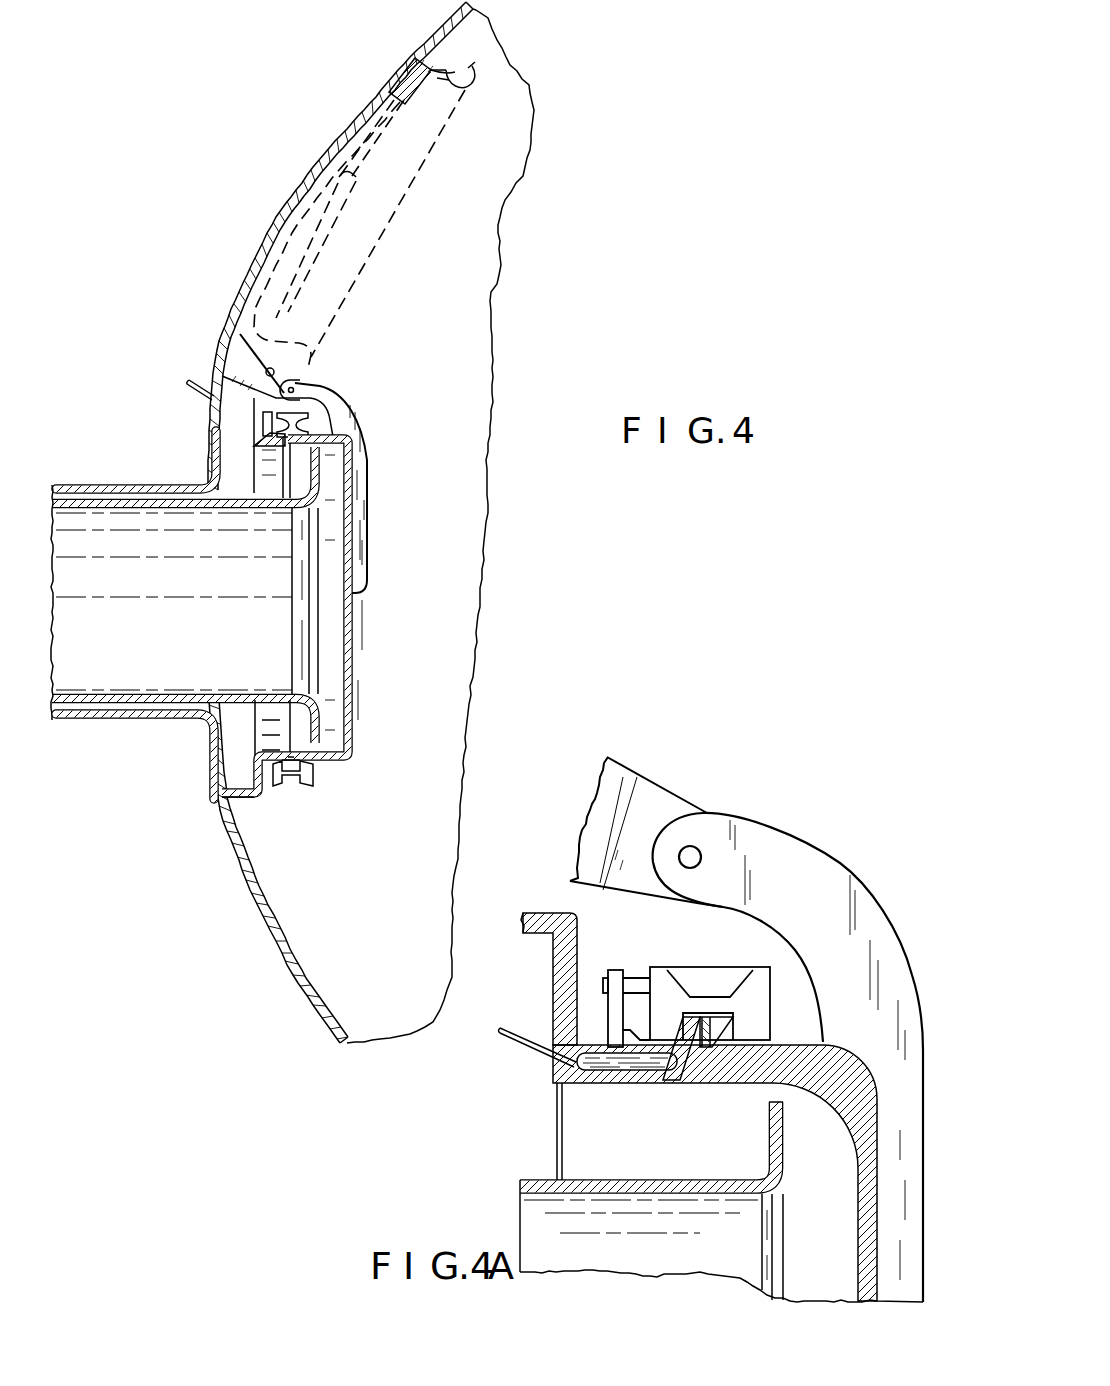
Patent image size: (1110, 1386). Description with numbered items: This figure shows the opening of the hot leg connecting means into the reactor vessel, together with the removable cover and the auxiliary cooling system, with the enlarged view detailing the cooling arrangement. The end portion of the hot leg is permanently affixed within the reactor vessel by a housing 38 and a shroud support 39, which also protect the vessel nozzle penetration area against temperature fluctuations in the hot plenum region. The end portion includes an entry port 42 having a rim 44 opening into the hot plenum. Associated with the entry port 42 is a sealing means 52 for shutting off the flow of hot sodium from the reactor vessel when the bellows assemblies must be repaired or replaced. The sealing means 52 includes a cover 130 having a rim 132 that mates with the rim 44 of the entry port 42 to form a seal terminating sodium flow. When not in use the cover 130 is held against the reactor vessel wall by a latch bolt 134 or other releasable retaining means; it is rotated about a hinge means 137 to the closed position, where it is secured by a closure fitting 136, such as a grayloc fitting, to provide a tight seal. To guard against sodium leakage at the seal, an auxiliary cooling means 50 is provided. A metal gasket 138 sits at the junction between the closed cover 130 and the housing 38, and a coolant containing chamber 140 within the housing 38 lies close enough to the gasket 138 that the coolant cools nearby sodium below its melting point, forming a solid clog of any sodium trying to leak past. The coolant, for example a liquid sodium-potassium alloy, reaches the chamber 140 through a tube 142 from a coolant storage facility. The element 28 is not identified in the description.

In FIG. 4, the pipe 28 is at (157, 703).
In FIG. 4A, the pipe 28 is at (567, 1186).
In FIG. 4, the housing 38 is at (265, 800).
In FIG. 4A, the housing 38 is at (680, 1064).
In FIG. 4, the shroud support 39 is at (203, 760).
In FIG. 4, the entry port 42 is at (305, 657).
In FIG. 4A, the entry port 42 is at (780, 1237).
In FIG. 4, the rim 44 is at (319, 455).
In FIG. 4A, the rim 44 is at (786, 1137).
In FIG. 4, the auxiliary cooling means 50 is at (209, 380).
In FIG. 4A, the auxiliary cooling means 50 is at (553, 1018).
In FIG. 4, the sealing means 52 is at (408, 210).
In FIG. 4, the cover 130 is at (457, 72).
In FIG. 4A, the cover 130 is at (845, 1066).
In FIG. 4, the rim 132 is at (484, 93).
In FIG. 4, the latch bolt 134 is at (403, 72).
In FIG. 4, the closure fitting 136 is at (314, 770).
In FIG. 4, the hinge means 137 is at (293, 389).
In FIG. 4A, the metal gasket 138 is at (705, 1064).
In FIG. 4A, the coolant containing chamber 140 is at (612, 1064).
In FIG. 4A, the tube 142 is at (545, 1048).